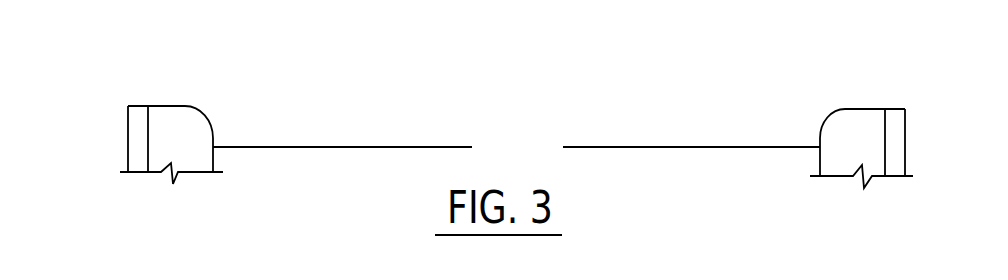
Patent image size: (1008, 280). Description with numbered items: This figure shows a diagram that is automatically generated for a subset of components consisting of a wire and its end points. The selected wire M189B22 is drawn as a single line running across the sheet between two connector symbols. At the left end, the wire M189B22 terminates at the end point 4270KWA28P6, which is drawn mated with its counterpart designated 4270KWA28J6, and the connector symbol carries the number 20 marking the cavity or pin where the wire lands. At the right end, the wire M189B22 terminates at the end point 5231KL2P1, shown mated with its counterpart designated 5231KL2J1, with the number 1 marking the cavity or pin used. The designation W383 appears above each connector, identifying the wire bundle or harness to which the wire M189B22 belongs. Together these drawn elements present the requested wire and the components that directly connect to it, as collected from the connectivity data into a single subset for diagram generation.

The left connector (cavity/pin 20) 20 is at (144, 144).
The right connector (cavity/pin 1) 1 is at (834, 148).
The wire harness W383 is at (516, 101).
The wire M189B22 is at (516, 144).
The end point 4270KWA28P6 is at (169, 123).
The receptacle connector 4270KWA28J6 is at (134, 160).
The end point 5231KL2P1 is at (820, 126).
The receptacle connector 5231KL2J1 is at (860, 164).